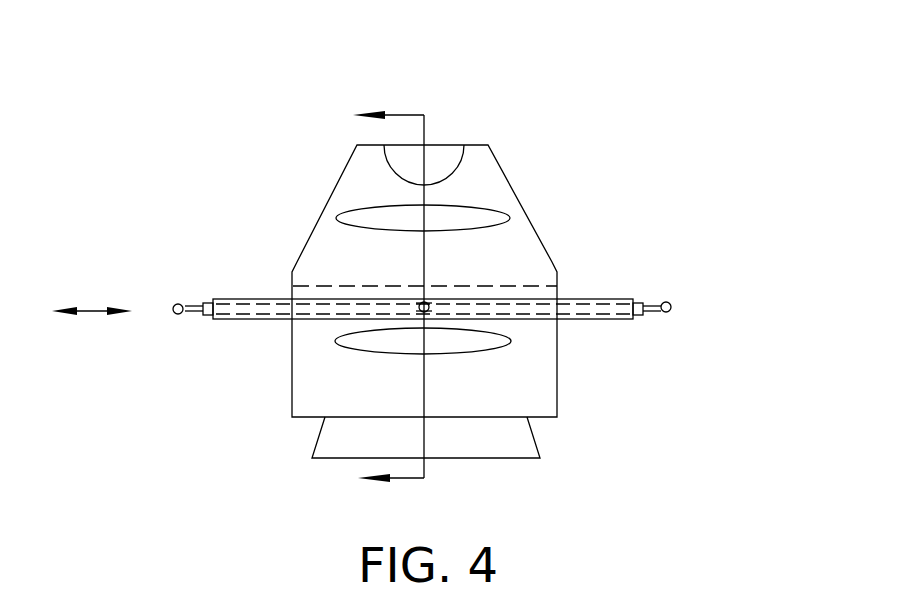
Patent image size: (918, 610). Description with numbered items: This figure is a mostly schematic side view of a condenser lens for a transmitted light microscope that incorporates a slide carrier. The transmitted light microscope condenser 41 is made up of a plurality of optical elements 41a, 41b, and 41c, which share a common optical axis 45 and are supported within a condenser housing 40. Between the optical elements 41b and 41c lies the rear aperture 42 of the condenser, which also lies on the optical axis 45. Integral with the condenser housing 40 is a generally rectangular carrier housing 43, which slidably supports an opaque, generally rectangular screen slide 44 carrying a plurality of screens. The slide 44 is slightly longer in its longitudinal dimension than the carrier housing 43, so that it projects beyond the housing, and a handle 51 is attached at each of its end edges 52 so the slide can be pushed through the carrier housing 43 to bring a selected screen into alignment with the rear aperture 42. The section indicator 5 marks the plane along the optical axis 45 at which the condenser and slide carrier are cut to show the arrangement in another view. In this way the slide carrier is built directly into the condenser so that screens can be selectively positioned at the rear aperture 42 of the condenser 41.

The section line 5- 5 is at (373, 301).
The condenser housing 40 is at (502, 164).
The transmitted light microscope condenser 41 is at (495, 190).
The optical element 41a is at (447, 145).
The optical element 41b is at (510, 216).
The optical element 41c is at (512, 339).
The rear aperture 42 is at (294, 286).
The carrier housing 43 is at (277, 322).
The screen slide 44 is at (643, 298).
The optical axis 45 is at (427, 372).
The handle 51 is at (672, 306).
The end edge 52 is at (203, 317).